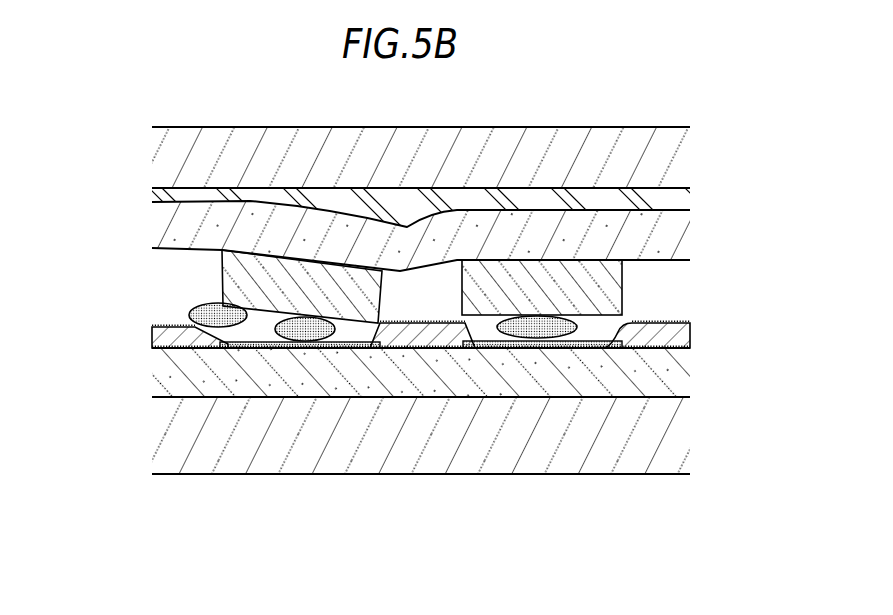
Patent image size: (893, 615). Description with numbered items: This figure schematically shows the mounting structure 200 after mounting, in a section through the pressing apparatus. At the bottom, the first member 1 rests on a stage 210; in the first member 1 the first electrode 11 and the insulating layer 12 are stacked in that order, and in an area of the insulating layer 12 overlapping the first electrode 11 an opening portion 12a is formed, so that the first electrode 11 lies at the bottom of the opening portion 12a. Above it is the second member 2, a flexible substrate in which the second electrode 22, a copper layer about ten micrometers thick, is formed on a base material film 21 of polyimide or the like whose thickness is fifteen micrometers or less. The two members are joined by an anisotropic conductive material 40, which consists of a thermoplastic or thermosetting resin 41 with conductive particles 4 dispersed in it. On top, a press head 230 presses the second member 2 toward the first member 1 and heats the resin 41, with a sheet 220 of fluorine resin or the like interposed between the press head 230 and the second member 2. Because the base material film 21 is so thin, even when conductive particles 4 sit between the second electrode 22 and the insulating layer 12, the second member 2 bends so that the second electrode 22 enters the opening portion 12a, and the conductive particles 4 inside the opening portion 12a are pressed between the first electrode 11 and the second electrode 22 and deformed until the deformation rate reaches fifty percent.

The press head 230 is at (708, 123).
The sheet 220 is at (708, 188).
The mounting structure 200 is at (745, 392).
The second member 2 is at (94, 207).
The base material film 21 is at (141, 202).
The second electrode 22 is at (220, 273).
The resin 41 is at (427, 309).
The anisotropic conductive material 40 is at (148, 312).
The conductive particles 4 is at (166, 338).
The first member 1 is at (708, 345).
The first electrode 11 is at (251, 345).
The insulating layer 12 is at (196, 345).
The opening portion 12a is at (352, 328).
The stage 210 is at (708, 397).